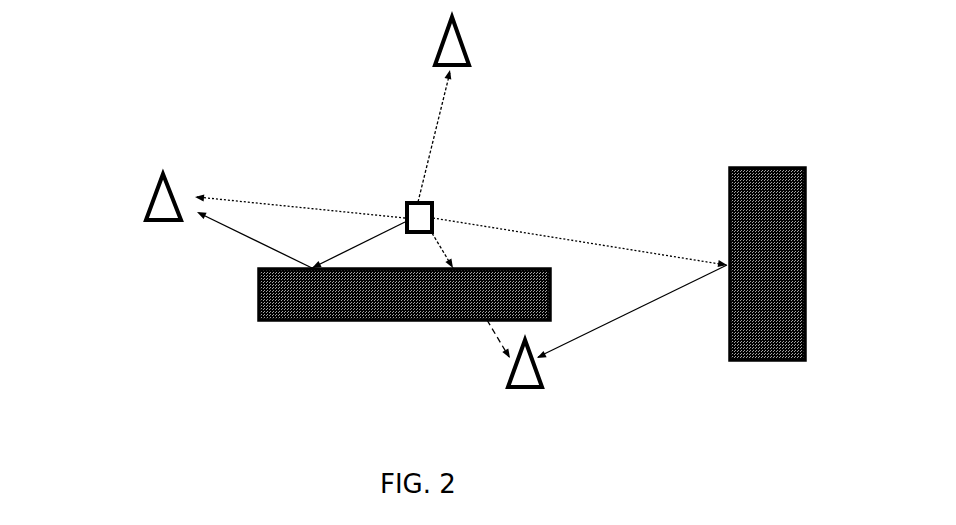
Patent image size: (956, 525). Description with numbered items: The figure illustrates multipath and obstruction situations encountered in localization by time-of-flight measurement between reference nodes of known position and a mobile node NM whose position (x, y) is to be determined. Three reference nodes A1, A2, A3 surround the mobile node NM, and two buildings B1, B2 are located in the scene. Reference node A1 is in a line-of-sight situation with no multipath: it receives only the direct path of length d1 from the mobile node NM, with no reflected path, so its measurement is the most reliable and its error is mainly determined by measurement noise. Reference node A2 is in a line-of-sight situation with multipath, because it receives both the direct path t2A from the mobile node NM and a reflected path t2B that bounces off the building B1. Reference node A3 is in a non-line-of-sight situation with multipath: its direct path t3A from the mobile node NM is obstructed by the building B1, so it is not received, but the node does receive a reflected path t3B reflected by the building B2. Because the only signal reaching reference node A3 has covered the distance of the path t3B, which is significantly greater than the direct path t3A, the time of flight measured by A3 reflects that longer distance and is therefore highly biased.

The mobile node NM is at (449, 224).
The reference node A1 is at (479, 36).
The reference node A2 is at (129, 170).
The reference node A3 is at (560, 375).
The building B1 is at (404, 294).
The building B2 is at (767, 264).
The direct path distance d1 is at (442, 136).
The direct path t2A is at (300, 200).
The reflected path t2B is at (301, 240).
The direct path t3A is at (475, 339).
The reflected path t3B is at (580, 288).